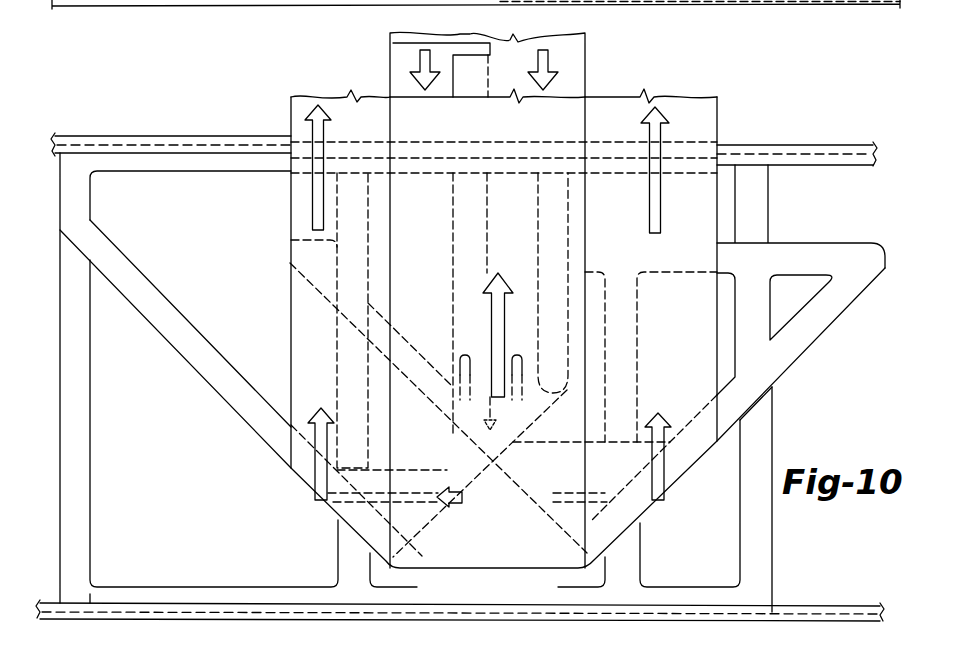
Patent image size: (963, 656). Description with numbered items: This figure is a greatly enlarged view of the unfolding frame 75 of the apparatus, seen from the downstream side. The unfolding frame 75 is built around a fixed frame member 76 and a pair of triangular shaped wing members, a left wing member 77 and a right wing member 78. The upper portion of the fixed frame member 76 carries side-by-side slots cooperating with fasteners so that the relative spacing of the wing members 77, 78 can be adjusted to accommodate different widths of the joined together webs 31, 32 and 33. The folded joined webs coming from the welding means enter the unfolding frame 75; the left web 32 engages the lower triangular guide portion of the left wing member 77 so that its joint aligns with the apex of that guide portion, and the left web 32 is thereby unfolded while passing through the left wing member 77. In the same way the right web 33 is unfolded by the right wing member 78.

The web 31 is at (450, 33).
The left web 32 is at (406, 57).
The right web 33 is at (326, 359).
The unfolding frame 75 is at (786, 134).
The fixed frame member 76 is at (228, 143).
The left wing member 77 is at (787, 364).
The right wing member 78 is at (198, 332).